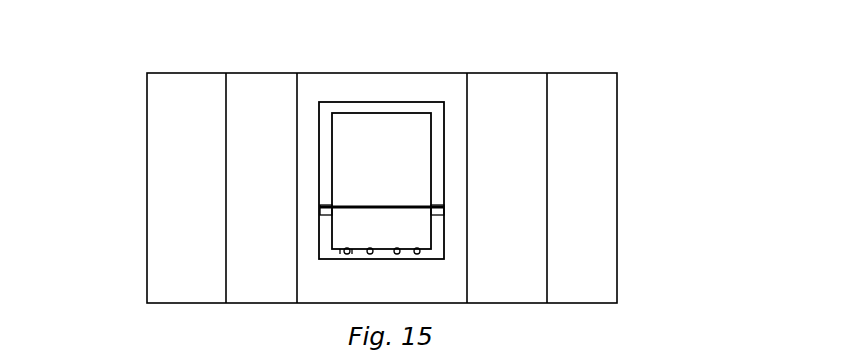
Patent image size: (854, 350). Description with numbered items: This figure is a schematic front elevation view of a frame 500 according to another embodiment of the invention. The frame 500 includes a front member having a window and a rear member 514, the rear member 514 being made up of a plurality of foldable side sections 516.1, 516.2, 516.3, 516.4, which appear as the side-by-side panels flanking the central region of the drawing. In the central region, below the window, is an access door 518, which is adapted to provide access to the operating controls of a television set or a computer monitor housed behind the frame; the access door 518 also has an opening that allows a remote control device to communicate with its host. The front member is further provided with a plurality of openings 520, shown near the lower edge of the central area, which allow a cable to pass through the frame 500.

The frame 500 is at (394, 164).
The rear member 514 is at (628, 250).
The foldable side section 516.1 is at (283, 93).
The foldable side section 516.2 is at (523, 95).
The foldable side section 516.3 is at (186, 90).
The foldable side section 516.4 is at (570, 95).
The access door 518 is at (390, 230).
The openings 520 is at (345, 258).